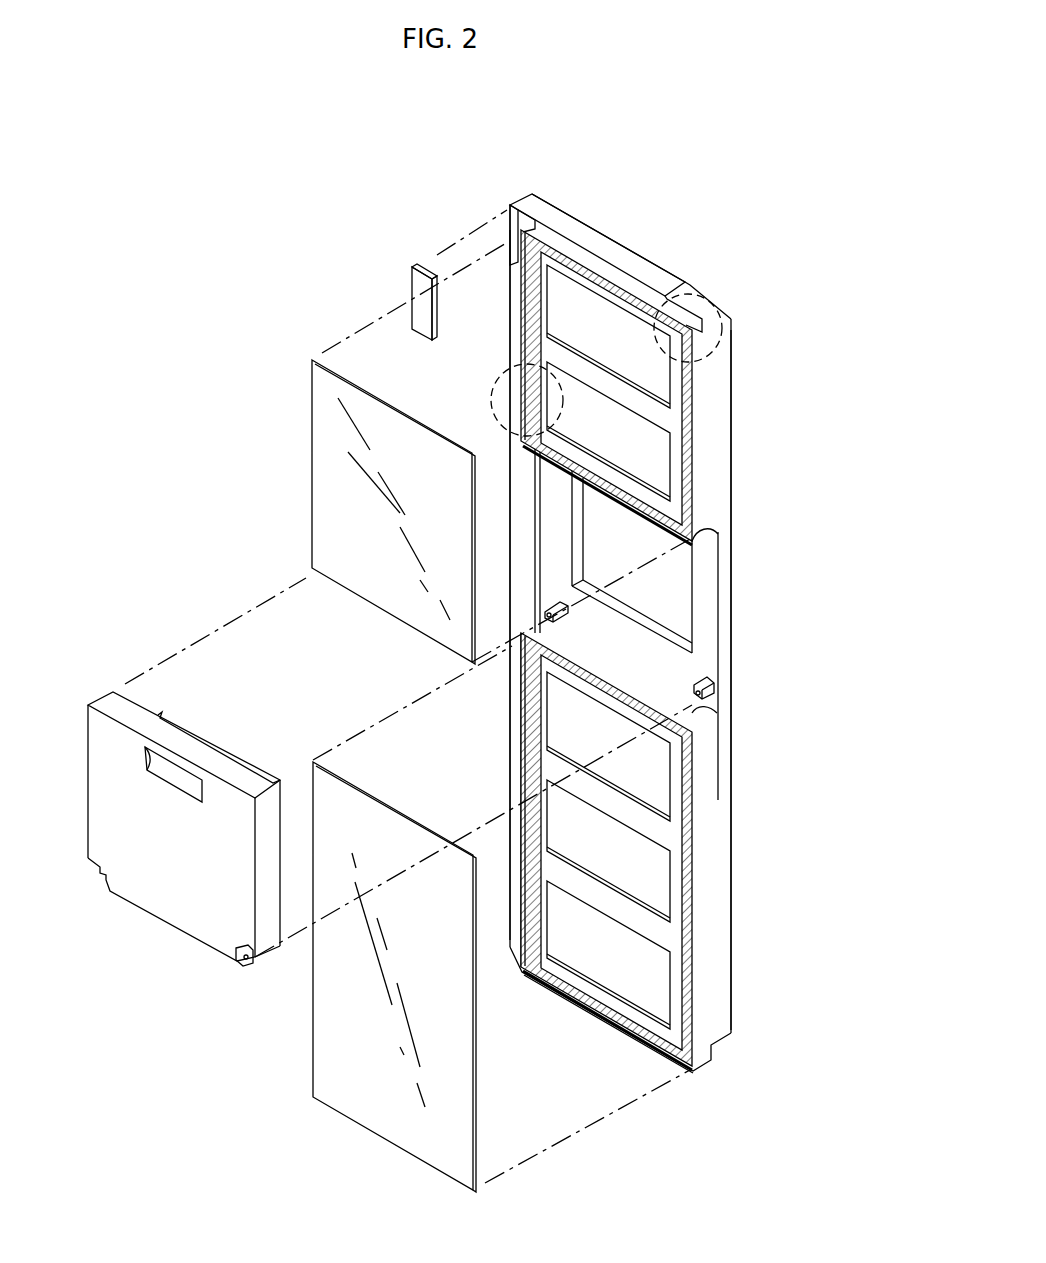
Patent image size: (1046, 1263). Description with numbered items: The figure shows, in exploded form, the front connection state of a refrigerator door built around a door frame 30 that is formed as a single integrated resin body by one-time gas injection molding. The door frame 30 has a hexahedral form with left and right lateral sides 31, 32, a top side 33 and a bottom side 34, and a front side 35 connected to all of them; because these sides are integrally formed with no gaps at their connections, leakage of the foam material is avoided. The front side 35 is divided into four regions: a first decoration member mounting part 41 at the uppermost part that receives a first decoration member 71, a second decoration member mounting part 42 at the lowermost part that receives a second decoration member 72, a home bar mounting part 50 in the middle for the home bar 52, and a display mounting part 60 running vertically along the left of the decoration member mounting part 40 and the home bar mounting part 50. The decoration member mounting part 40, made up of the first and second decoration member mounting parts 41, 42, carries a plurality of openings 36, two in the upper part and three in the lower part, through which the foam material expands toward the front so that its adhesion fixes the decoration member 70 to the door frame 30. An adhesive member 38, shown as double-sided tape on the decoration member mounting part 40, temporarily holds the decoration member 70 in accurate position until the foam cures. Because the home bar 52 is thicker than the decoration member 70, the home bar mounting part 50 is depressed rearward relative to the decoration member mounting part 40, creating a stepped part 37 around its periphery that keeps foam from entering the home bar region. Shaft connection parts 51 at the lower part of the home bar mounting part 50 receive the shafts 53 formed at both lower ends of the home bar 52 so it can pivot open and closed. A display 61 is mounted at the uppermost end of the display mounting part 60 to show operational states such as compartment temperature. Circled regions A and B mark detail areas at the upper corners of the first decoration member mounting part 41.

The door frame 30 is at (504, 201).
The lateral side 31 is at (508, 292).
The lateral side 32 is at (721, 899).
The top side 33 is at (616, 256).
The bottom side 34 is at (600, 973).
The front side 35 is at (684, 795).
The openings 36 is at (600, 341).
The stepped part 37 is at (716, 537).
The adhesive member 38 is at (530, 754).
The decoration member mounting part 40 is at (667, 650).
The first decoration member mounting part 41 is at (686, 438).
The second decoration member mounting part 42 is at (686, 940).
The home bar mounting part 50 is at (702, 609).
The shaft connection parts 51 is at (706, 688).
The home bar 52 is at (172, 897).
The shafts 53 is at (244, 965).
The display mounting part 60 is at (518, 480).
The display 61 is at (410, 288).
The decoration member 70 is at (385, 896).
The first decoration member 71 is at (398, 600).
The second decoration member 72 is at (376, 795).
The detail region A is at (708, 302).
The detail region B is at (504, 381).